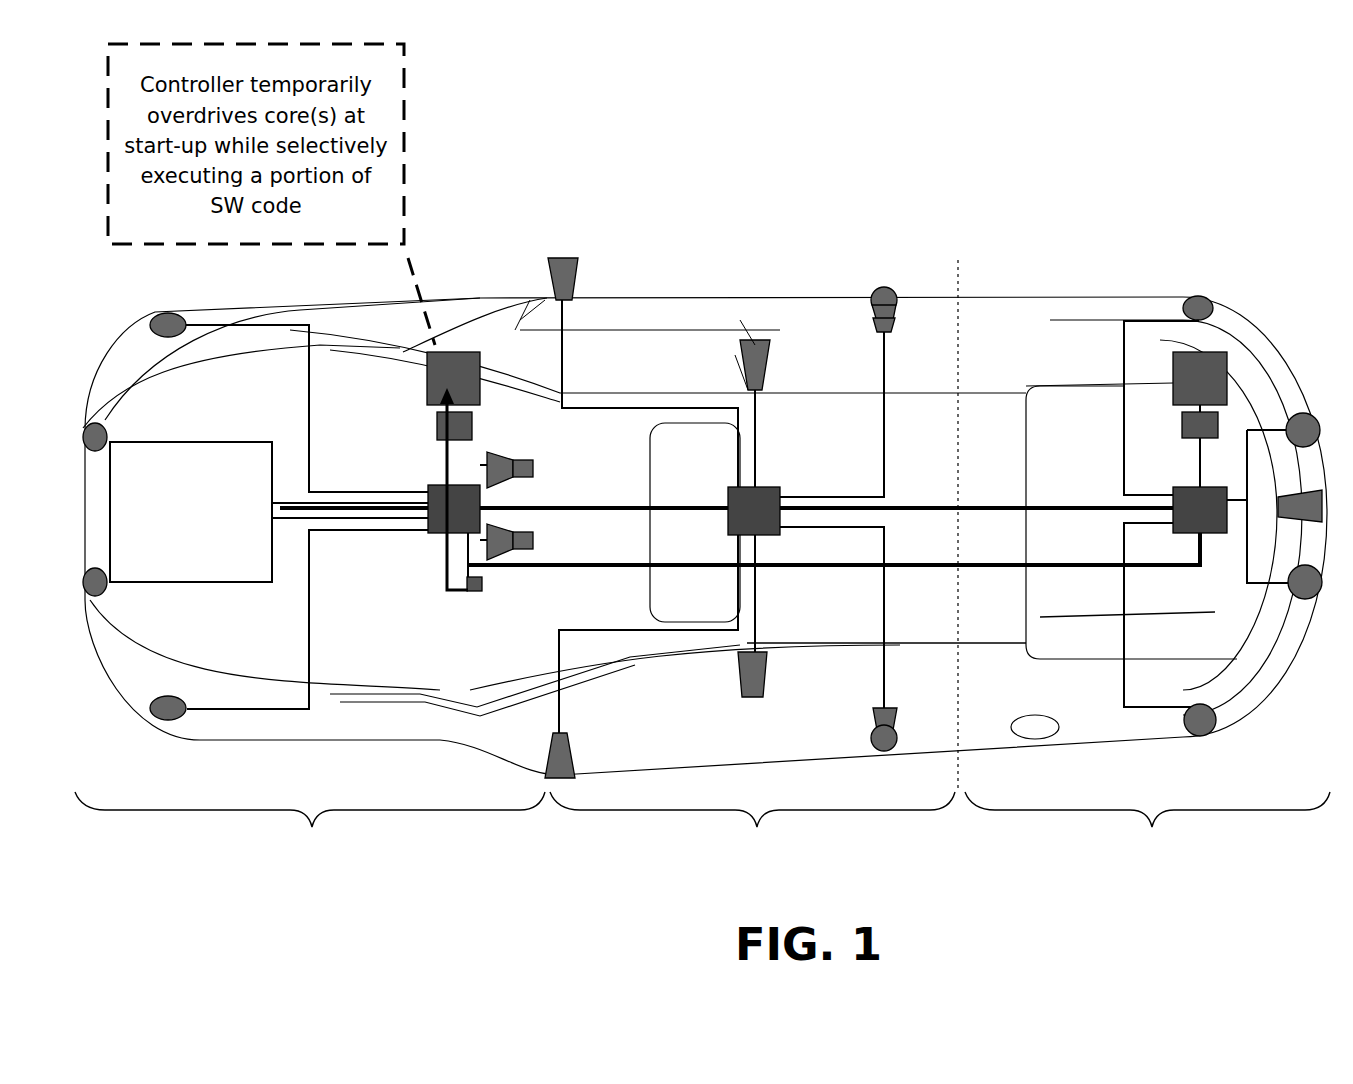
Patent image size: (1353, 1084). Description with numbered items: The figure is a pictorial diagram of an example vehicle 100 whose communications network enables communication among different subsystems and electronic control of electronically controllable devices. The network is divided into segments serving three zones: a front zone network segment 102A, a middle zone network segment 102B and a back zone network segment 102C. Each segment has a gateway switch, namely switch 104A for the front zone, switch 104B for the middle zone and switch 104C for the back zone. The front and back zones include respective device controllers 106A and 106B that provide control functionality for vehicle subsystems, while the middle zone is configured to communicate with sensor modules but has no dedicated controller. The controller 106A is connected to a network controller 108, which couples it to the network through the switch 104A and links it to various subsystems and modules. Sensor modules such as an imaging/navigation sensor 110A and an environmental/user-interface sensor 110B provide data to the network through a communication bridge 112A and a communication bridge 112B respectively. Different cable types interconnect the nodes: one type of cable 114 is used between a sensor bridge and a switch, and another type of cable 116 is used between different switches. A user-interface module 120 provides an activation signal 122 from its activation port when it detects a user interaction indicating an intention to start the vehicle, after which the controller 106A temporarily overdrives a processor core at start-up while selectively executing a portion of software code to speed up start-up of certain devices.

The vehicle 100 is at (876, 118).
The front zone network segment 102A is at (310, 831).
The middle zone network segment 102B is at (752, 831).
The back zone network segment 102C is at (1147, 831).
The switch 104A is at (430, 487).
The switch 104B is at (765, 487).
The switch 104C is at (1173, 492).
The device controller 106A is at (427, 378).
The device controller 106B is at (1228, 378).
The network controller 108 is at (437, 425).
The imaging/navigation sensor 110A is at (560, 257).
The environmental/user-interface sensor 110B is at (886, 289).
The communication bridge 112A is at (576, 290).
The communication bridge 112B is at (872, 320).
The cable 114 is at (198, 582).
The cable 116 is at (928, 506).
The user-interface module 120 is at (478, 592).
The activation signal 122 is at (452, 594).